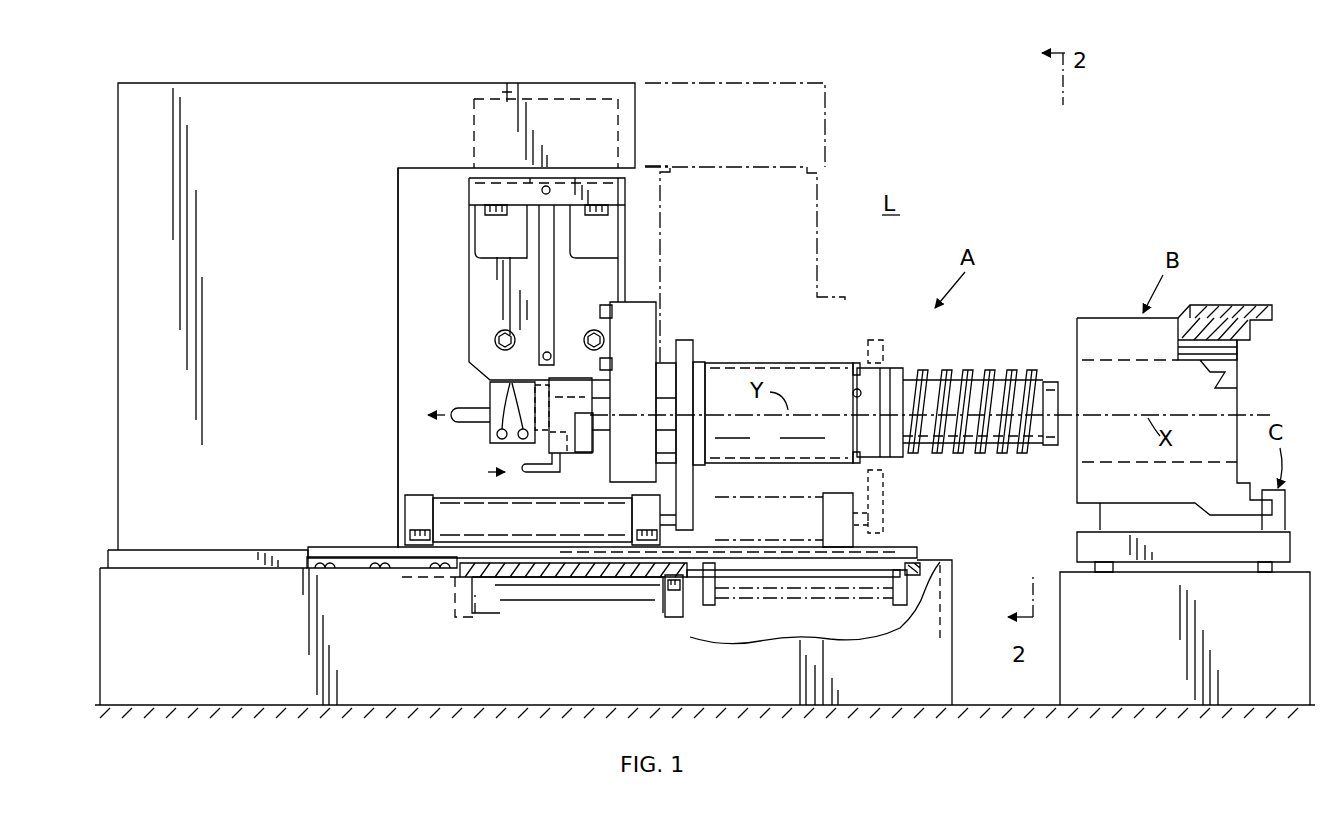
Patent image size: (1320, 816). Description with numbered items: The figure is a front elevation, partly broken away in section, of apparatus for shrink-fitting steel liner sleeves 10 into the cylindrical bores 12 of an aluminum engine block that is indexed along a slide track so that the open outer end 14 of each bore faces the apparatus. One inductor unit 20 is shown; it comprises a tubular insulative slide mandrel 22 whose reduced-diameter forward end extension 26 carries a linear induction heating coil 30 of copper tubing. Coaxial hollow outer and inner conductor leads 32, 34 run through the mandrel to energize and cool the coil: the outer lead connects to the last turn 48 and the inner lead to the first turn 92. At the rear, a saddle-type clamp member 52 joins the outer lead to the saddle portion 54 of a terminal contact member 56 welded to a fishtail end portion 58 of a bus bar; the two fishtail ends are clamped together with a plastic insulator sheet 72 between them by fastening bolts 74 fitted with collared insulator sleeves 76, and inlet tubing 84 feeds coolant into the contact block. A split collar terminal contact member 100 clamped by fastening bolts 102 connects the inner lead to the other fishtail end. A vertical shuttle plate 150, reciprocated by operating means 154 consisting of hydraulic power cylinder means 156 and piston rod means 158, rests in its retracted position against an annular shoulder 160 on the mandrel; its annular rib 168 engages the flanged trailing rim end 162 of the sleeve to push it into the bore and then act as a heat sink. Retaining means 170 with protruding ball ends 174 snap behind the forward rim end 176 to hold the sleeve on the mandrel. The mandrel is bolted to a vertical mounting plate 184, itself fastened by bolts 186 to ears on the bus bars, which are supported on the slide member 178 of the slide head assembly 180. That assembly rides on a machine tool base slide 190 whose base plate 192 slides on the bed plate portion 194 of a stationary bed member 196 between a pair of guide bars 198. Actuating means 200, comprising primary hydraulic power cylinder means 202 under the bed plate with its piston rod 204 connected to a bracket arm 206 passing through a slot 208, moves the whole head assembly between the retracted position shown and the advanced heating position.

The liner sleeve 10 is at (778, 362).
The cylindrical bore 12 is at (1222, 372).
The open outer end 14 is at (1077, 463).
The inductor unit 20 is at (872, 365).
The slide mandrel 22 is at (872, 432).
The forward end extension 26 is at (1050, 378).
The linear induction heating coil 30 is at (970, 368).
The outer conductor lead 32 is at (620, 436).
The inner conductor lead 34 is at (468, 403).
The last turn 48 is at (902, 425).
The saddle-type clamp member 52 is at (583, 455).
The saddle portion 54 is at (580, 405).
The terminal contact member 56 is at (540, 446).
The fishtail end portion 58 is at (485, 300).
The plastic insulator sheet 72 is at (465, 282).
The fastening bolt 74 is at (494, 340).
The collared plastic insulator sleeve 76 is at (585, 335).
The inlet tubing 84 is at (540, 472).
The first turn 92 is at (1033, 368).
The split collar type terminal contact member 100 is at (488, 435).
The fastening bolt 102 is at (510, 382).
The shuttle plate 150 is at (700, 350).
The operating means 154 is at (458, 492).
The hydraulic power cylinder means 156 is at (440, 500).
The piston rod means 158 is at (658, 518).
The annular shoulder 160 is at (688, 352).
The flanged trailing rim end 162 is at (705, 440).
The annular rib 168 is at (698, 392).
The retaining means 170 is at (858, 360).
The ball end 174 is at (860, 458).
The forward rim end 176 is at (855, 382).
The slide member 178 is at (208, 90).
The slide head assembly 180 is at (345, 78).
The vertical mounting plate 184 is at (652, 325).
The bolt 186 is at (602, 305).
The machine tool base slide 190 is at (378, 545).
The base plate 192 is at (228, 568).
The bed plate portion 194 is at (518, 540).
The bed member 196 is at (158, 578).
The guide bar 198 is at (333, 556).
The actuating means 200 is at (677, 620).
The primary hydraulic power cylinder means 202 is at (572, 597).
The piston rod 204 is at (713, 602).
The bracket arm 206 is at (718, 595).
The slot 208 is at (832, 572).